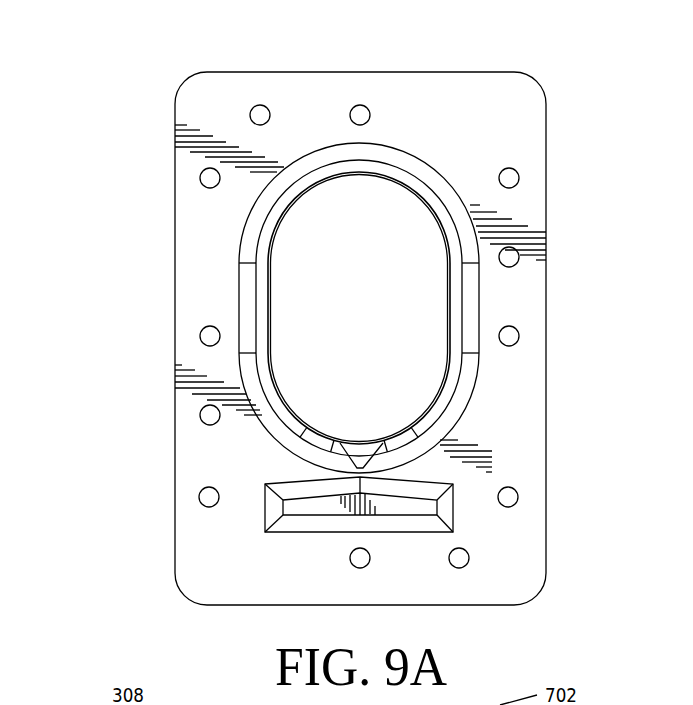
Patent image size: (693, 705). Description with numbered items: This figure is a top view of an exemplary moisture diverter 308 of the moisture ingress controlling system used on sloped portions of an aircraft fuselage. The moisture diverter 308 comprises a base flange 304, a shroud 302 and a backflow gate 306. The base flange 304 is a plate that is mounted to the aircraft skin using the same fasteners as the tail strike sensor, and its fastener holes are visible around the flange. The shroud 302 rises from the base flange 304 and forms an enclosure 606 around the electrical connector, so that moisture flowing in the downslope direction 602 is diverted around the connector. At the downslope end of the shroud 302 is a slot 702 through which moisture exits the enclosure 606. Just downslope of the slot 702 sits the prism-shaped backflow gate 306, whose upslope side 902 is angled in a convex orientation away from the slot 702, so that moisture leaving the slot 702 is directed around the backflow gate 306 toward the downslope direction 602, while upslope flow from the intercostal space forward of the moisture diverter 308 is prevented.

The moisture diverter 308 is at (150, 100).
The base flange 304 is at (512, 111).
The shroud 302 is at (273, 217).
The enclosure 606 is at (383, 318).
The downslope direction 602 is at (108, 423).
The slot 702 is at (353, 453).
The upslope side 902 is at (430, 486).
The backflow gate 306 is at (422, 507).